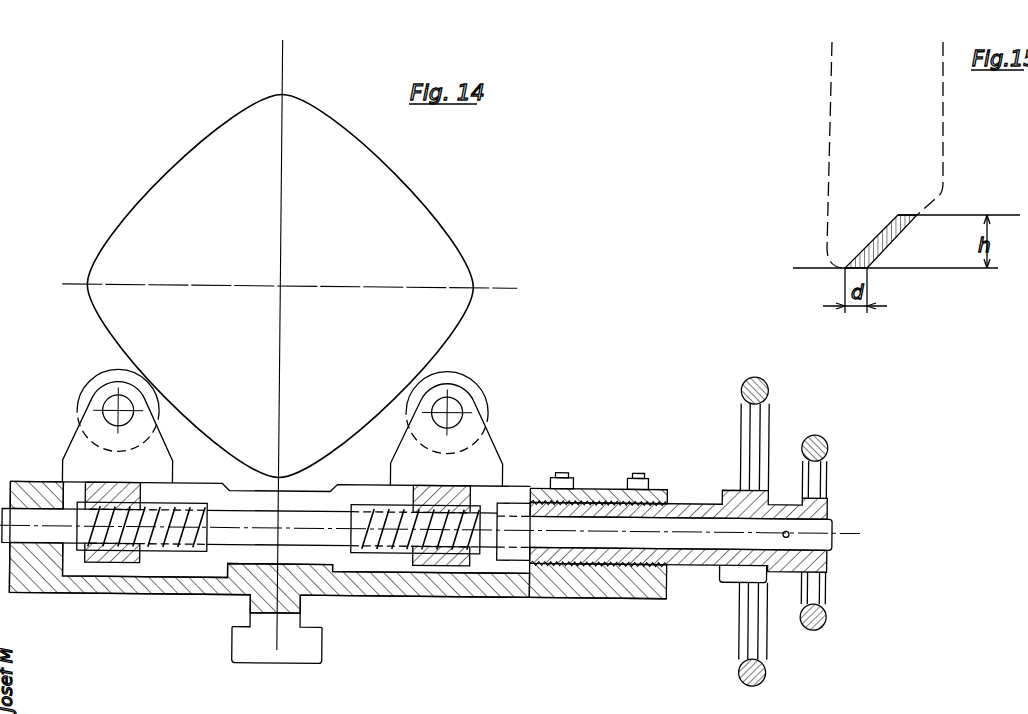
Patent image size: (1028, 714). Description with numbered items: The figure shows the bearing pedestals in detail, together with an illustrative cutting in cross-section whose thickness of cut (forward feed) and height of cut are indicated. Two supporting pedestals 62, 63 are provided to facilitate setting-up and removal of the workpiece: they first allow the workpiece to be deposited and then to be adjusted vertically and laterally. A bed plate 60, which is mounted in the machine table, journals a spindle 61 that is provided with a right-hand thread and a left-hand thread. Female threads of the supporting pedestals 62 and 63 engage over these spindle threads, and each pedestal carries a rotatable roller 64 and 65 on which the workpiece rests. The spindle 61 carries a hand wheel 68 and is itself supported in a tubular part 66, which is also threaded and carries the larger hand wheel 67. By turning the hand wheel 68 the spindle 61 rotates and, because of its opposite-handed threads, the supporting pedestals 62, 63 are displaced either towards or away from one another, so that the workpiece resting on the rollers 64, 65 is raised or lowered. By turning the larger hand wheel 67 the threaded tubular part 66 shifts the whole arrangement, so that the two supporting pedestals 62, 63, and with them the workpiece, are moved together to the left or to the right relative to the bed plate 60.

The bed plate 60 is at (155, 588).
The spindle 61 is at (311, 536).
The supporting pedestal 62 is at (123, 473).
The supporting pedestal 63 is at (452, 472).
The rotatable roller 64 is at (90, 390).
The rotatable roller 65 is at (507, 378).
The tubular part 66 is at (707, 559).
The hand wheel 67 is at (760, 376).
The hand wheel 68 is at (833, 425).